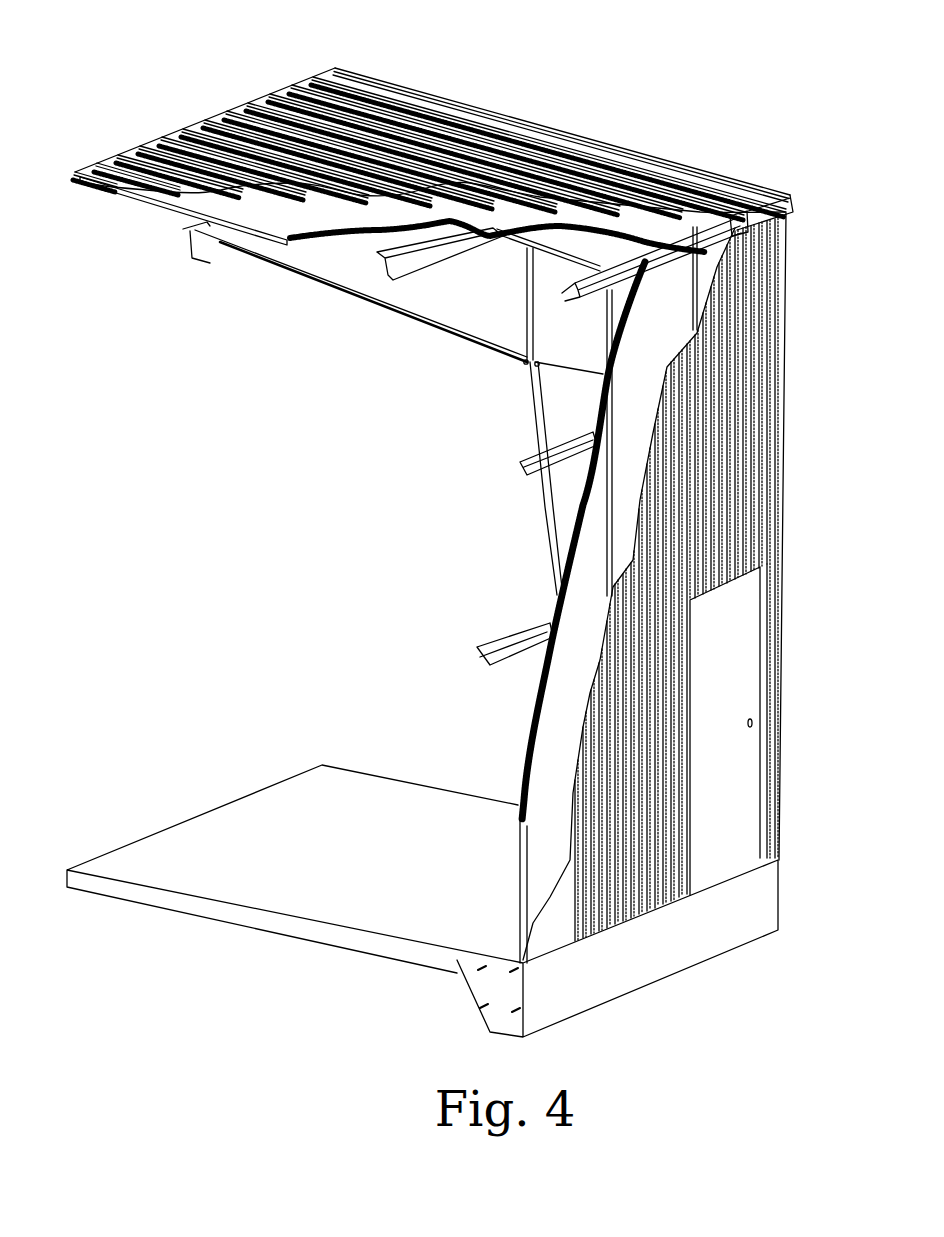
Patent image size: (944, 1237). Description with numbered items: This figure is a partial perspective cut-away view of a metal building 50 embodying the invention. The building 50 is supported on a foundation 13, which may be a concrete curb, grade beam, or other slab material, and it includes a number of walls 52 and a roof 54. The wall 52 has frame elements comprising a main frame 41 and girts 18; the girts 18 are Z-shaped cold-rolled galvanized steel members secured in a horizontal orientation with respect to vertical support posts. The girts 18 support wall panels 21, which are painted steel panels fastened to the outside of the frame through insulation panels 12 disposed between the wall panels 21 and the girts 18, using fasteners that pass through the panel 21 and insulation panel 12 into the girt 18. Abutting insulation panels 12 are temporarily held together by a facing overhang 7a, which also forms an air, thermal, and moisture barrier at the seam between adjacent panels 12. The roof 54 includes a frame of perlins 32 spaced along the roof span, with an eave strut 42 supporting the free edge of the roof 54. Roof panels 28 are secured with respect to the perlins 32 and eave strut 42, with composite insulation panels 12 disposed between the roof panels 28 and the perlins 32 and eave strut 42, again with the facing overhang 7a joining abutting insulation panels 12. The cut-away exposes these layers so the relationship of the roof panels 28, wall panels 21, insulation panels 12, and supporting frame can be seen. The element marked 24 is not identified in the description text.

The roof panels 28 is at (387, 83).
The roof 54 is at (578, 118).
The building 50 is at (753, 83).
The eave beam 24 is at (690, 230).
The insulation panels 12 is at (388, 440).
The facing overhang 7a is at (390, 233).
The perlins 32 is at (383, 273).
The main frame 41 is at (510, 337).
The eave strut 42 is at (603, 287).
The girts 18 is at (533, 450).
The wall panels 21 is at (775, 363).
The walls 52 is at (806, 520).
The foundation 13 is at (663, 973).